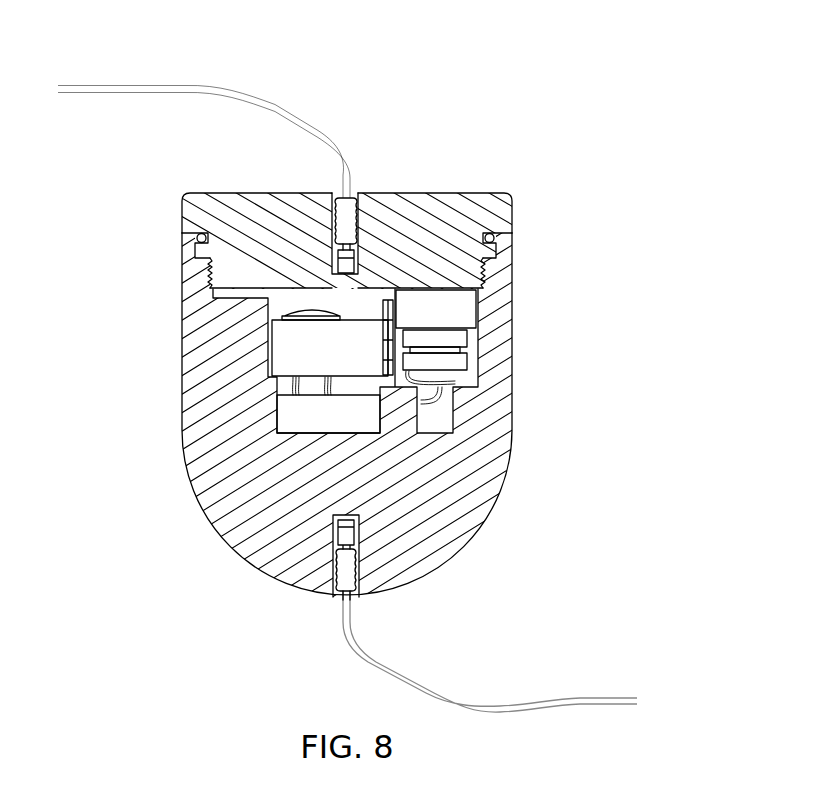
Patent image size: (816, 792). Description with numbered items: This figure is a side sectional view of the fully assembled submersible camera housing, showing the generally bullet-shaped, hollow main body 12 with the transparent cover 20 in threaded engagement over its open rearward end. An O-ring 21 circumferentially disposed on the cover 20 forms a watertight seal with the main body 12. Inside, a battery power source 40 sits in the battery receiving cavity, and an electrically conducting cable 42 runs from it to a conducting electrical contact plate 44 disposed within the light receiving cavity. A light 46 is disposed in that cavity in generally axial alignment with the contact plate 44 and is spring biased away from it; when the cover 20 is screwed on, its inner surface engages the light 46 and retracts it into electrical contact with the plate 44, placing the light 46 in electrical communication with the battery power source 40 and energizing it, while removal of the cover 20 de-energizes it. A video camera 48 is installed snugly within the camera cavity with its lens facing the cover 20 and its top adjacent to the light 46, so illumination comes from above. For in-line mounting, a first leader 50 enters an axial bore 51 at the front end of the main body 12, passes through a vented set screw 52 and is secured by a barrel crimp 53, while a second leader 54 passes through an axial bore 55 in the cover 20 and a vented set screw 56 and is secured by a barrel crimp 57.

The main body 12 is at (181, 273).
The cover 20 is at (471, 193).
The O-ring 21 is at (197, 237).
The battery power source 40 is at (335, 425).
The electrically conducting cable 42 is at (293, 381).
The conducting electrical contact plate 44 is at (472, 391).
The light 46 is at (457, 313).
The video camera 48 is at (340, 355).
The first leader 50 is at (557, 698).
The axial bore 51 is at (336, 597).
The vented set screw 52 is at (352, 570).
The barrel crimp 53 is at (347, 525).
The second leader 54 is at (193, 86).
The axial bore 55 is at (357, 197).
The vented set screw 56 is at (327, 195).
The barrel crimp 57 is at (346, 252).